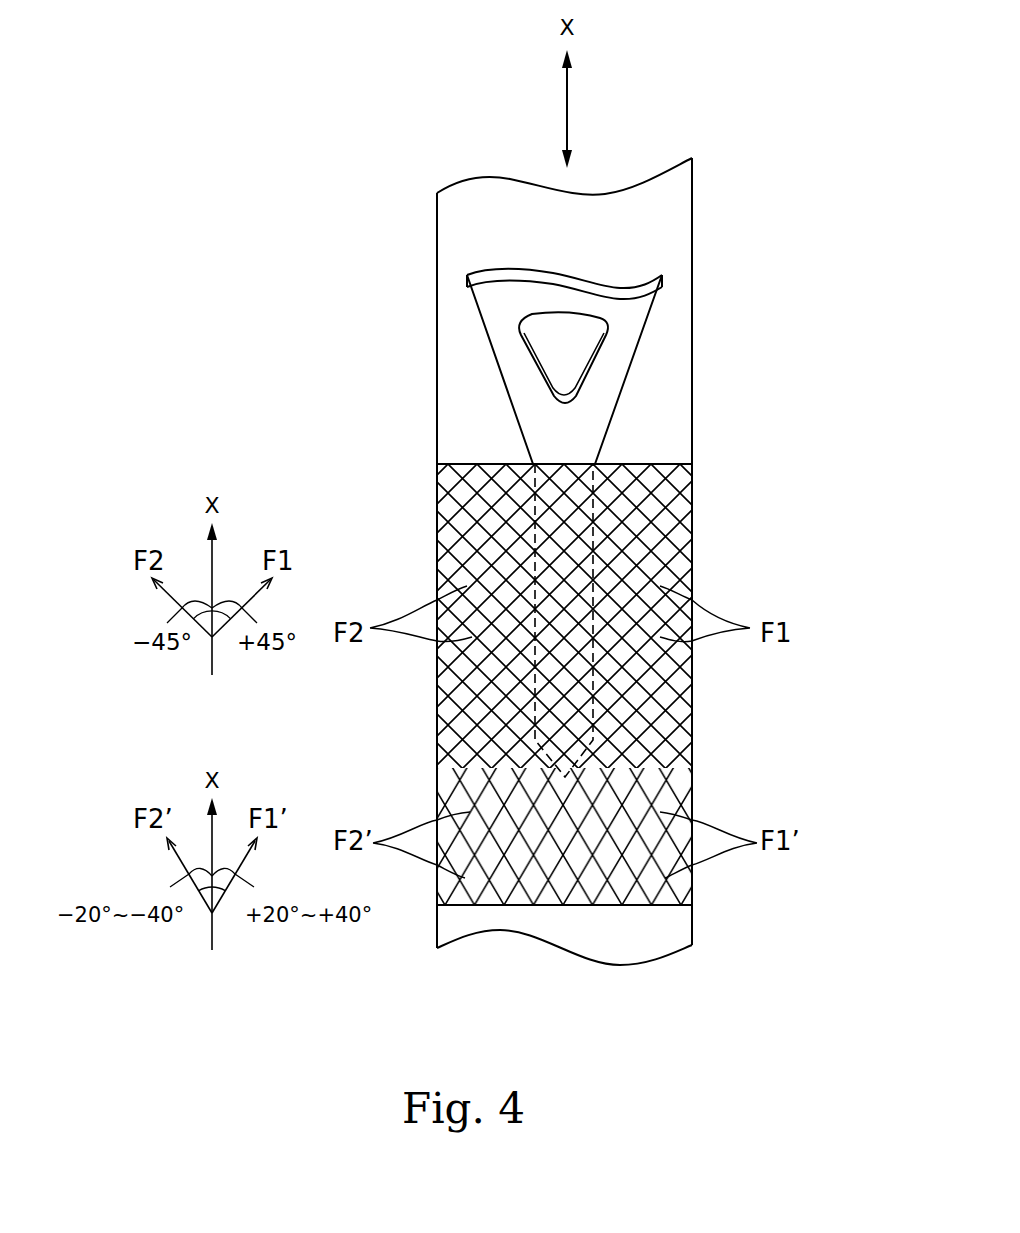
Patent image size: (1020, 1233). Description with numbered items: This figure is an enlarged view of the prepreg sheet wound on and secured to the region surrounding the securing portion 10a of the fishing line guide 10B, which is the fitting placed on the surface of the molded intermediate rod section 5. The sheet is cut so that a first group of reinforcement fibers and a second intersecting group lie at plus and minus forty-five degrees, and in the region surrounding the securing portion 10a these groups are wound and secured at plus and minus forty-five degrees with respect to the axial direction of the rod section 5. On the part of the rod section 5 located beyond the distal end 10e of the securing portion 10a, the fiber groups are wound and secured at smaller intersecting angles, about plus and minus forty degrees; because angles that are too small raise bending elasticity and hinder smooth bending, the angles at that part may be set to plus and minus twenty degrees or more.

The rod section 5 is at (673, 250).
The fishing line guide 10B is at (613, 357).
The securing portion 10a is at (602, 535).
The distal end 10e is at (565, 777).